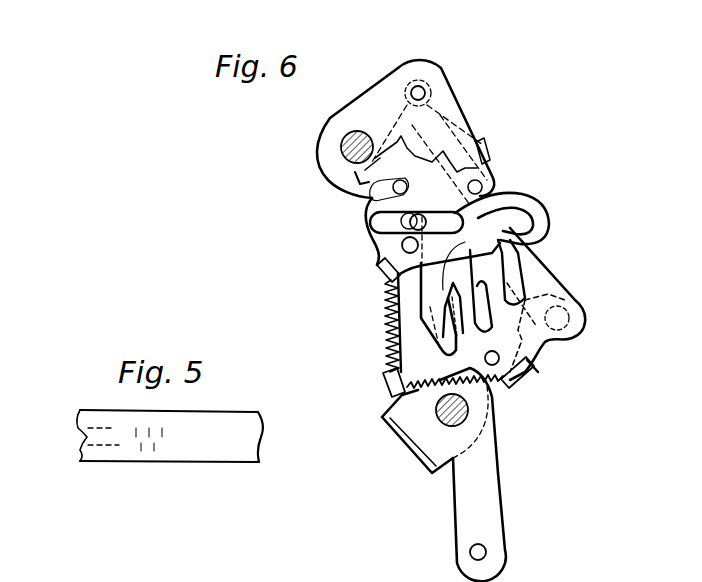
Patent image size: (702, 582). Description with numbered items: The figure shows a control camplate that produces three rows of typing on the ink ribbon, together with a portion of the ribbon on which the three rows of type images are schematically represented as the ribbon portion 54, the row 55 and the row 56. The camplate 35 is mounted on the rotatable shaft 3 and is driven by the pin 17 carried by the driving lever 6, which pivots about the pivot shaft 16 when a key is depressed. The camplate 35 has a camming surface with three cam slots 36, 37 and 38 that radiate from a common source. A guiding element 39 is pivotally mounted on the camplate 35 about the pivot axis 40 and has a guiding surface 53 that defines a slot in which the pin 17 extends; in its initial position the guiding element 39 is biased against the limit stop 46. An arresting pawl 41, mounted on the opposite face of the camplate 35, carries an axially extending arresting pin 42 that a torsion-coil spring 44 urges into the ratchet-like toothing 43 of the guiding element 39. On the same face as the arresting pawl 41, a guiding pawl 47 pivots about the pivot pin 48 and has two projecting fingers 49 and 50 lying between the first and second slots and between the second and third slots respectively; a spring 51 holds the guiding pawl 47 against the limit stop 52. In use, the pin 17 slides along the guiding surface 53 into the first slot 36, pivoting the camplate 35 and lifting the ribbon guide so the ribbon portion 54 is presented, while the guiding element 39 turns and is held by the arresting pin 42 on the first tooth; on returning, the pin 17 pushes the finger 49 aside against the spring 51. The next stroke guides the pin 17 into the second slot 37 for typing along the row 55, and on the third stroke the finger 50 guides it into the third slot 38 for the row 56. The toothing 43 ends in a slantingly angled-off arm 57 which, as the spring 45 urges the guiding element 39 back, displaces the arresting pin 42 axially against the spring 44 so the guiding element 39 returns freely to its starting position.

In FIG. 6, the rotatable shaft 3 is at (340, 144).
In FIG. 6, the driving lever 6 is at (490, 470).
In FIG. 6, the pivot shaft 16 is at (437, 423).
In FIG. 6, the pin 17 is at (401, 221).
In FIG. 6, the camplate 35 is at (576, 312).
In FIG. 6, the first cam slot 36 is at (495, 255).
In FIG. 6, the second cam slot 37 is at (513, 257).
In FIG. 6, the third cam slot 38 is at (440, 349).
In FIG. 6, the guiding element 39 is at (550, 240).
In FIG. 6, the pivot axis 40 is at (402, 246).
In FIG. 6, the arresting pawl 41 is at (487, 177).
In FIG. 6, the arresting pin 42 is at (490, 189).
In FIG. 6, the ratchet-like toothing 43 is at (481, 154).
In FIG. 6, the torsion-coil spring 44 is at (457, 123).
In FIG. 6, the spring 45 is at (390, 329).
In FIG. 6, the limit stop 46 is at (396, 192).
In FIG. 6, the guiding pawl 47 is at (563, 320).
In FIG. 6, the pivot pin 48 is at (503, 386).
In FIG. 6, the projecting finger 49 is at (473, 268).
In FIG. 6, the projecting finger 50 is at (455, 292).
In FIG. 6, the spring 51 is at (440, 389).
In FIG. 6, the limit stop 52 is at (570, 313).
In FIG. 6, the guiding surface 53 is at (512, 222).
In FIG. 5, the ribbon portion 54 is at (90, 422).
In FIG. 5, the ribbon row 55 is at (86, 436).
In FIG. 5, the ribbon row 56 is at (86, 447).
In FIG. 6, the slantingly angled-off arm 57 is at (356, 177).